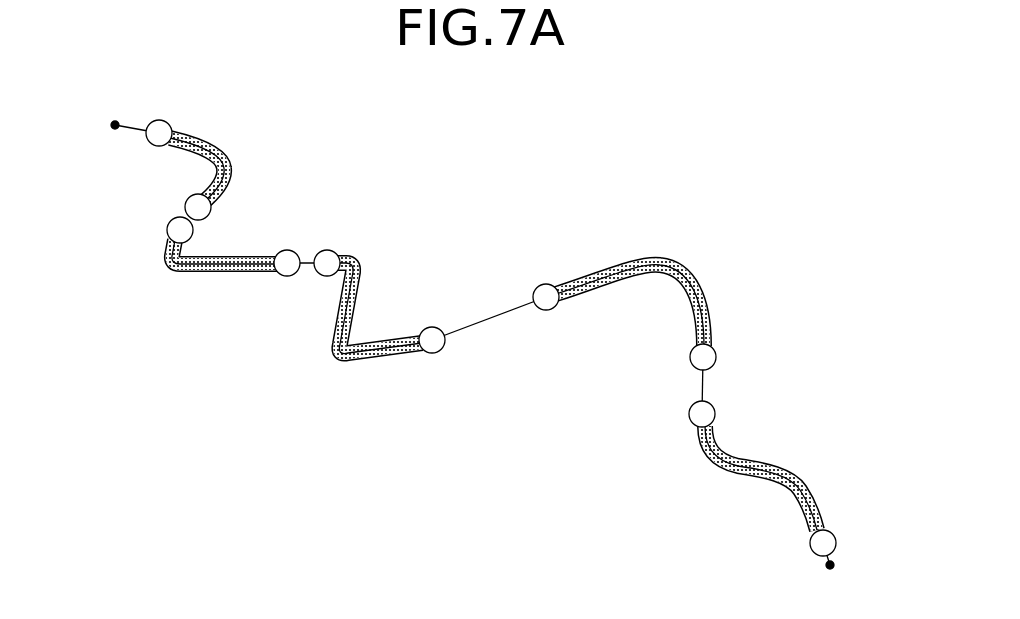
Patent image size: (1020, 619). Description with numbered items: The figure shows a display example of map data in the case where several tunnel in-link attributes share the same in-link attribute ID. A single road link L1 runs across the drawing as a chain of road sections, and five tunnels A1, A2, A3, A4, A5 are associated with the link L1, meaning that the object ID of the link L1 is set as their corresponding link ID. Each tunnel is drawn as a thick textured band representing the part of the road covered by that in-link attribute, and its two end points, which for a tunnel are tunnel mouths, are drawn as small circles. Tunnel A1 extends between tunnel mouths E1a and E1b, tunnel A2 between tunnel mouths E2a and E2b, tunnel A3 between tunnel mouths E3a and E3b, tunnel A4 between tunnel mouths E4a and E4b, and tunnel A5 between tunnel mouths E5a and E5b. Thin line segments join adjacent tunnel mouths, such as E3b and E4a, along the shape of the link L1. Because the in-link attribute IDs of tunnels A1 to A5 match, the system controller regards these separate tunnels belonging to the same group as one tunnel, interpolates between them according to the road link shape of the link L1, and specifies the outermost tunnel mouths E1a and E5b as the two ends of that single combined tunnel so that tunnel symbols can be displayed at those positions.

The tunnel A1 is at (233, 162).
The tunnel A2 is at (168, 273).
The tunnel A3 is at (327, 361).
The tunnel A4 is at (680, 263).
The tunnel A5 is at (786, 458).
The link L1 is at (477, 324).
The tunnel mouth E1a is at (147, 140).
The tunnel mouth E1b is at (210, 211).
The tunnel mouth E2a is at (169, 231).
The tunnel mouth E2b is at (277, 275).
The tunnel mouth E3a is at (337, 253).
The tunnel mouth E3b is at (430, 353).
The tunnel mouth E4a is at (543, 310).
The tunnel mouth E4b is at (716, 360).
The tunnel mouth E5a is at (689, 418).
The tunnel mouth E5b is at (830, 531).